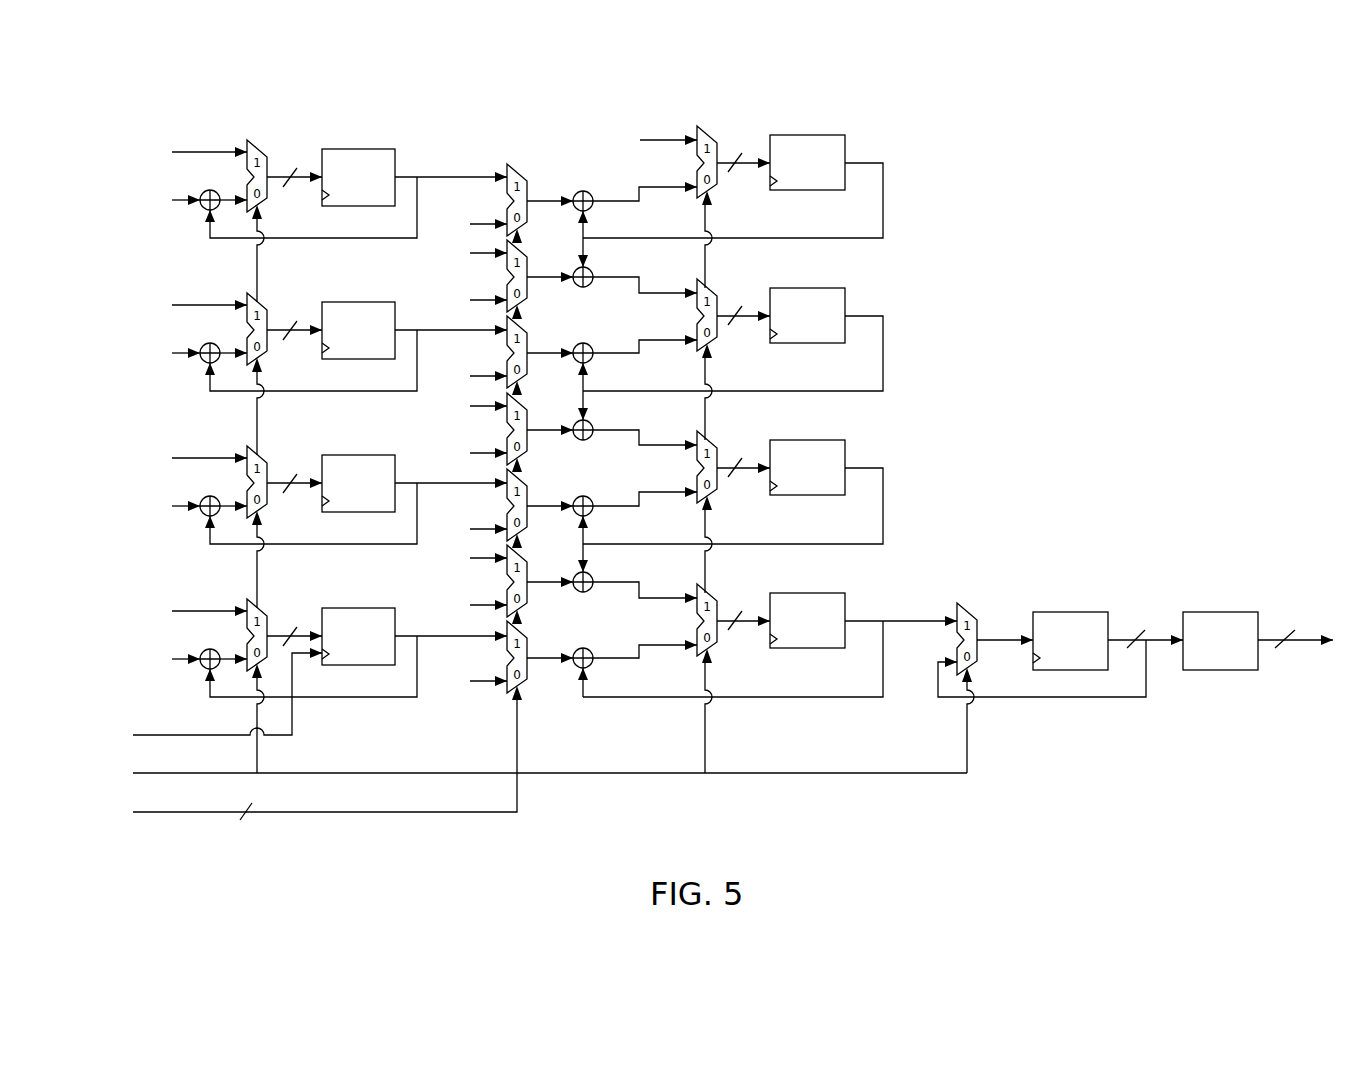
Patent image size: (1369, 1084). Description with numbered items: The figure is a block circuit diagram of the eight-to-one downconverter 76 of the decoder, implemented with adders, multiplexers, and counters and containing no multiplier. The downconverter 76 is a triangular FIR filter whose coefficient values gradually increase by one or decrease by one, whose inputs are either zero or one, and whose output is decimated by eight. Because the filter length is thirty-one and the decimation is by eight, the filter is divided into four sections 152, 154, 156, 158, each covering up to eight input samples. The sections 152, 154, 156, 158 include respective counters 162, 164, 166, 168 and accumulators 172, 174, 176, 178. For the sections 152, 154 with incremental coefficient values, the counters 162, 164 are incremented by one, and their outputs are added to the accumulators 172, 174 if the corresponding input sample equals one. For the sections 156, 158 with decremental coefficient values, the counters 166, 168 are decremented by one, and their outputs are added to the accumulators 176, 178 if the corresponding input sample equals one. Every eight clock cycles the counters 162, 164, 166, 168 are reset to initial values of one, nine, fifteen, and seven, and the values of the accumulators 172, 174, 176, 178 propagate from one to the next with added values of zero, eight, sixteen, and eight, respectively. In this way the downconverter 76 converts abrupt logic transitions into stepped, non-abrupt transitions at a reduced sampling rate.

The 8-to-1 downconverter 76 is at (1060, 190).
The first filter section 152 is at (128, 178).
The second filter section 154 is at (272, 374).
The third filter section 156 is at (272, 527).
The fourth filter section 158 is at (272, 686).
The counter 162 is at (345, 149).
The counter 164 is at (367, 313).
The counter 166 is at (367, 466).
The counter 168 is at (367, 619).
The accumulator 172 is at (792, 135).
The accumulator 174 is at (815, 297).
The accumulator 176 is at (815, 449).
The accumulator 178 is at (815, 602).